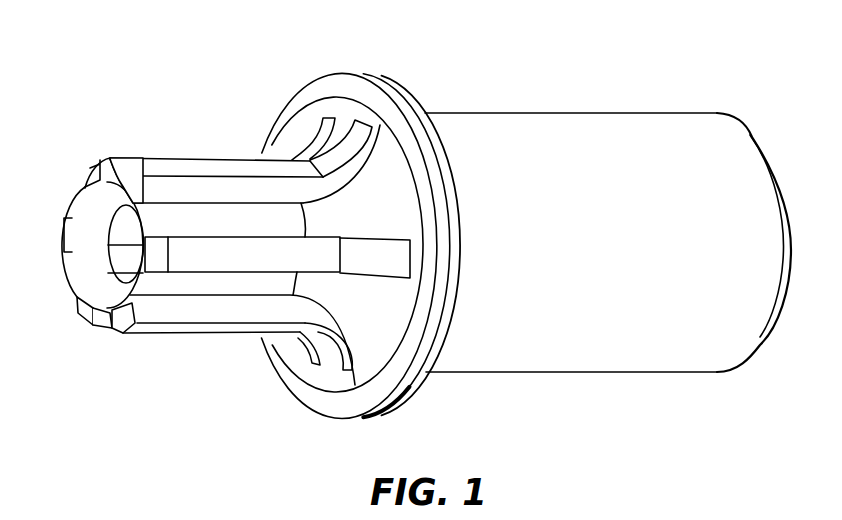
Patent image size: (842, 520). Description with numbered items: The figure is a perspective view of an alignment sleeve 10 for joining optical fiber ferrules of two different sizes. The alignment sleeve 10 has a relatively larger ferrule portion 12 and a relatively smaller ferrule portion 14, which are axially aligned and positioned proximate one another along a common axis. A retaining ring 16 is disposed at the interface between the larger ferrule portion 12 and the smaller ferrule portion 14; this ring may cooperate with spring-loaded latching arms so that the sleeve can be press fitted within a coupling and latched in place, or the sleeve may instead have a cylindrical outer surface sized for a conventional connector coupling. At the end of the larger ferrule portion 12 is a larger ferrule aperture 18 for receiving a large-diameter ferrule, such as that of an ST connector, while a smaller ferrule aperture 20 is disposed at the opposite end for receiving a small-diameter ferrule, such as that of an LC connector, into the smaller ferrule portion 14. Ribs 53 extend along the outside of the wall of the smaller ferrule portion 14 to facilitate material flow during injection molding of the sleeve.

The alignment sleeve 10 is at (414, 214).
The larger ferrule portion 12 is at (609, 230).
The smaller ferrule portion 14 is at (222, 227).
The retaining ring 16 is at (392, 85).
The larger ferrule aperture 18 is at (770, 336).
The smaller ferrule aperture 20 is at (93, 265).
The ribs 53 is at (212, 168).